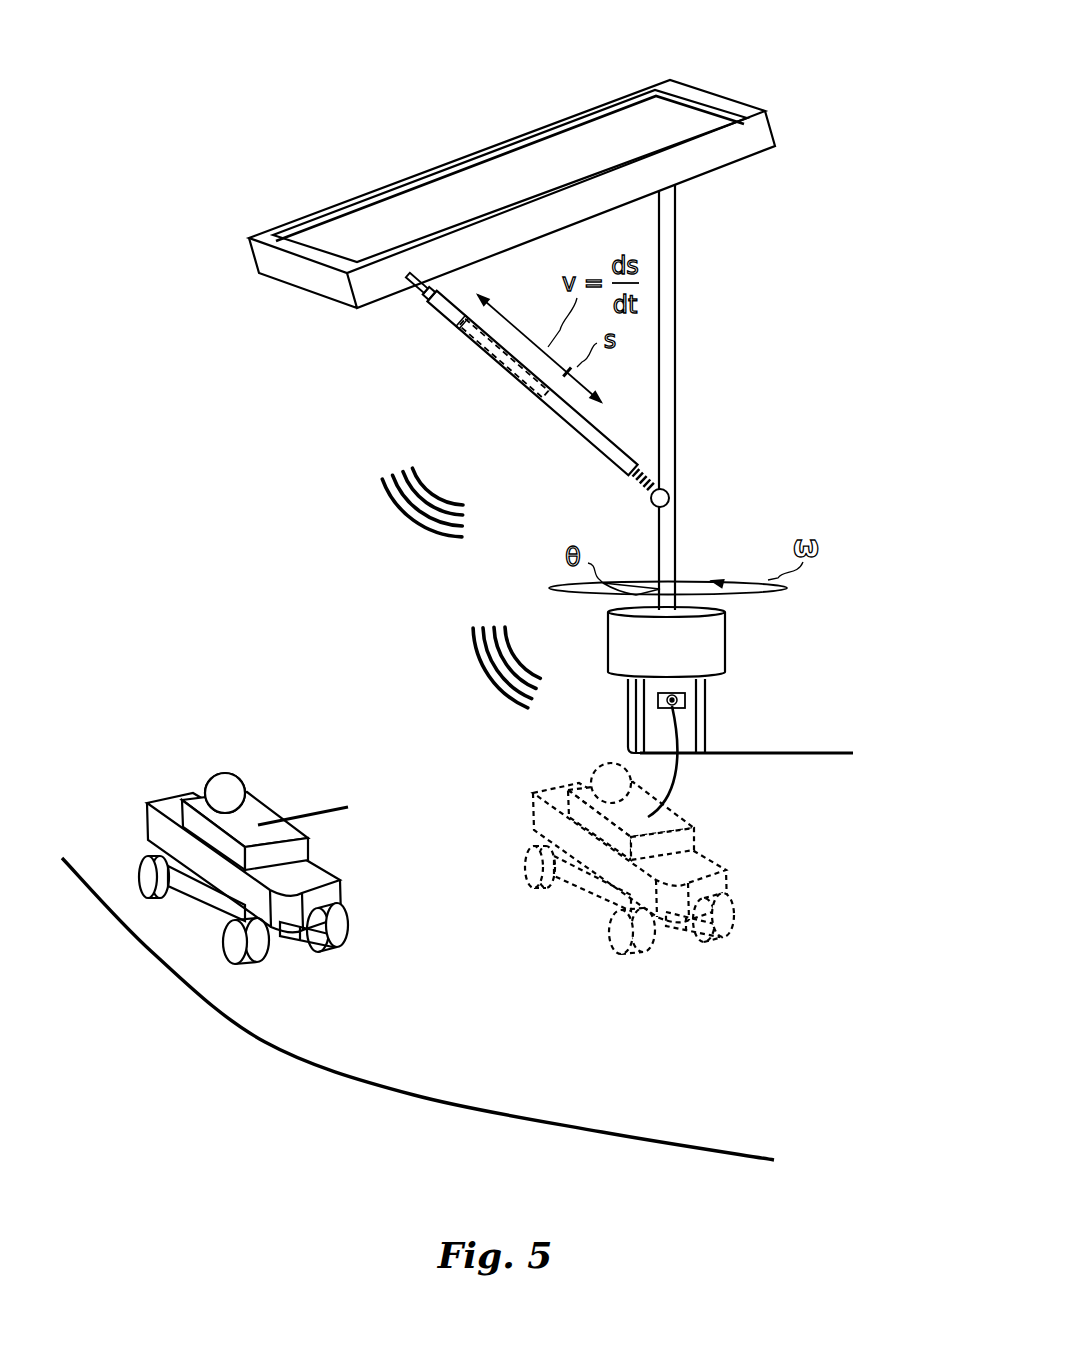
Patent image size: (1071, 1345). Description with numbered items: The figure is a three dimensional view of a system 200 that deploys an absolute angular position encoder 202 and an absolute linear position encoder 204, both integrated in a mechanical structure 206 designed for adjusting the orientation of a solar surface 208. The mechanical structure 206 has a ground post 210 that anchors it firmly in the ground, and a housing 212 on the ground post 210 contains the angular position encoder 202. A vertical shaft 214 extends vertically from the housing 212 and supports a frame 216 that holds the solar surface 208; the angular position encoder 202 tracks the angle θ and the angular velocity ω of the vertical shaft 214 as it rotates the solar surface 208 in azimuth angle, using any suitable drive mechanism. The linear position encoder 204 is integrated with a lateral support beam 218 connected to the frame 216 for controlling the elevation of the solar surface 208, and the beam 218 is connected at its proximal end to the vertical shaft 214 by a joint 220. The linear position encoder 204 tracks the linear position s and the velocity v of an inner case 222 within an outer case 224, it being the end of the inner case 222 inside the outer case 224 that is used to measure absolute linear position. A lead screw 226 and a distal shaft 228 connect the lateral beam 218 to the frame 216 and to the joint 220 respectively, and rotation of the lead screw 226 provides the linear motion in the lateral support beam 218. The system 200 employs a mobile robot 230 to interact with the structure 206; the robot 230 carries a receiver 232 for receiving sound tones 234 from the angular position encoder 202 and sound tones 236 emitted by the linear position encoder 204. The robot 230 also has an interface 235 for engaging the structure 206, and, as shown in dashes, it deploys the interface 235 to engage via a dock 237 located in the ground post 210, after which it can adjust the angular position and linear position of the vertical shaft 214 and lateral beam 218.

The system 200 is at (141, 64).
The absolute angular position encoder 202 is at (728, 667).
The absolute linear position encoder 204 is at (415, 402).
The mechanical structure 206 is at (762, 367).
The solar surface 208 is at (405, 203).
The ground post 210 is at (705, 695).
The housing 212 is at (727, 642).
The vertical shaft 214 is at (675, 233).
The frame 216 is at (702, 94).
The lateral support beam 218 is at (544, 410).
The joint 220 is at (670, 497).
The inner case 222 is at (460, 333).
The outer case 224 is at (550, 425).
The lead screw 226 is at (645, 490).
The distal shaft 228 is at (413, 296).
The mobile robot 230 is at (292, 836).
The receiver 232 is at (240, 773).
The sound tones 234 is at (488, 677).
The interface 235 is at (305, 807).
The sound tones 236 is at (425, 527).
The dock 237 is at (648, 697).